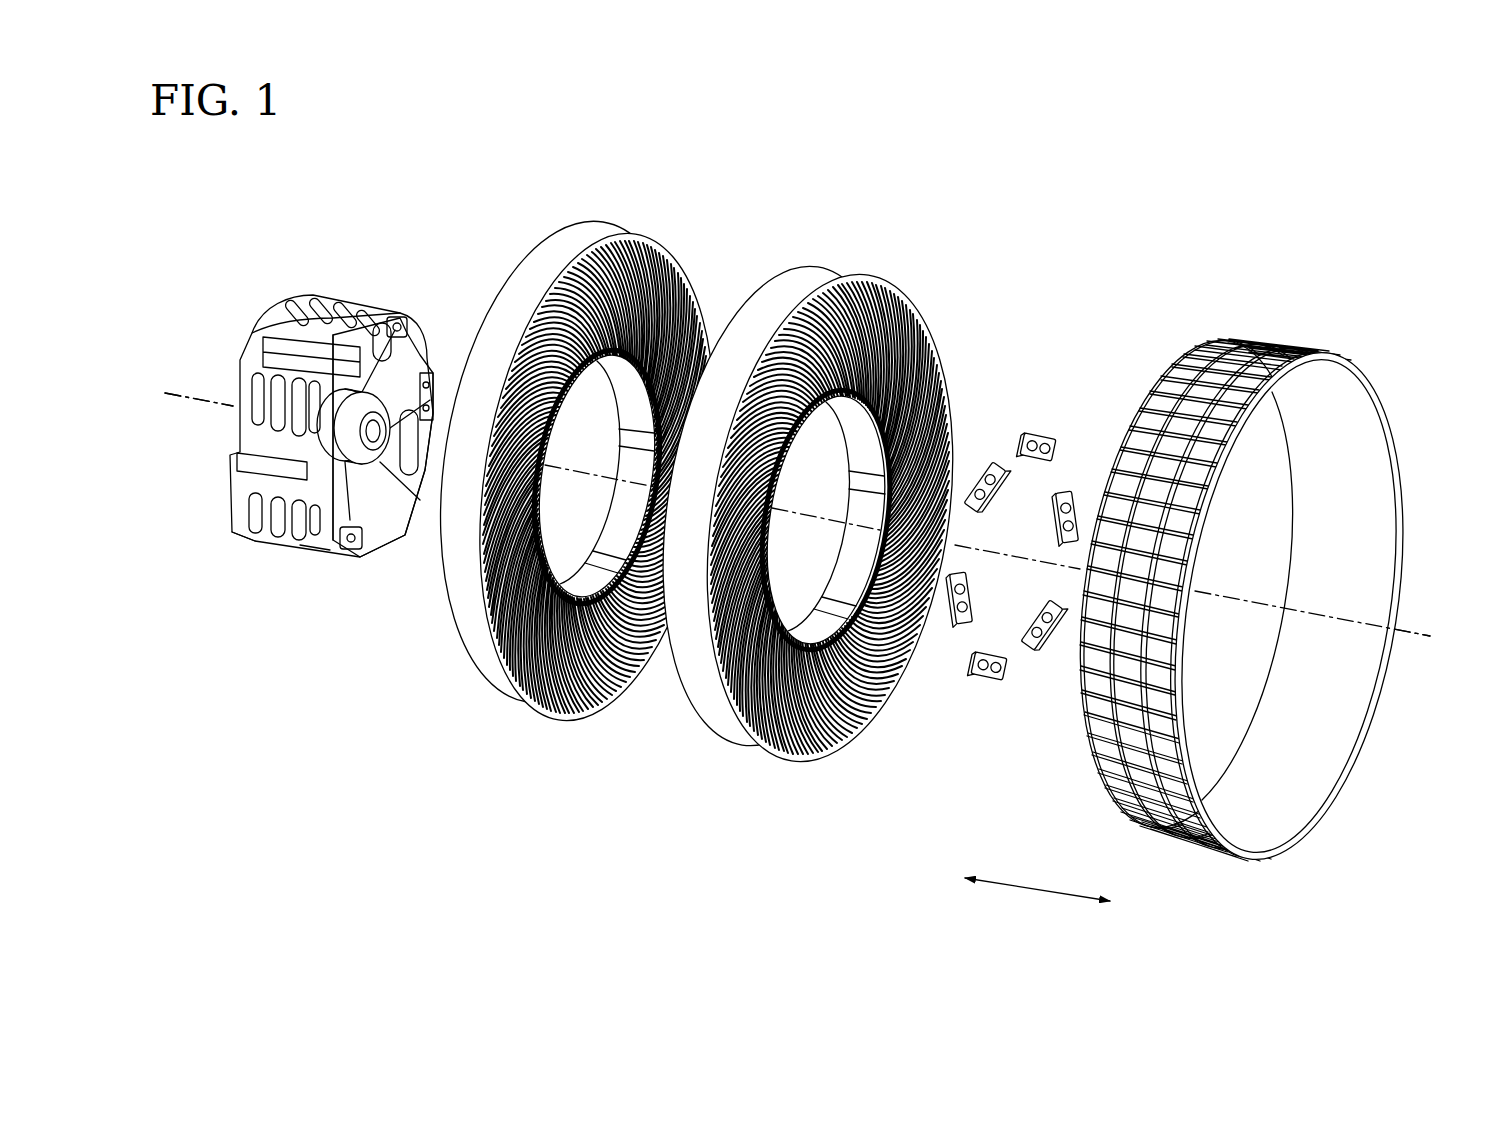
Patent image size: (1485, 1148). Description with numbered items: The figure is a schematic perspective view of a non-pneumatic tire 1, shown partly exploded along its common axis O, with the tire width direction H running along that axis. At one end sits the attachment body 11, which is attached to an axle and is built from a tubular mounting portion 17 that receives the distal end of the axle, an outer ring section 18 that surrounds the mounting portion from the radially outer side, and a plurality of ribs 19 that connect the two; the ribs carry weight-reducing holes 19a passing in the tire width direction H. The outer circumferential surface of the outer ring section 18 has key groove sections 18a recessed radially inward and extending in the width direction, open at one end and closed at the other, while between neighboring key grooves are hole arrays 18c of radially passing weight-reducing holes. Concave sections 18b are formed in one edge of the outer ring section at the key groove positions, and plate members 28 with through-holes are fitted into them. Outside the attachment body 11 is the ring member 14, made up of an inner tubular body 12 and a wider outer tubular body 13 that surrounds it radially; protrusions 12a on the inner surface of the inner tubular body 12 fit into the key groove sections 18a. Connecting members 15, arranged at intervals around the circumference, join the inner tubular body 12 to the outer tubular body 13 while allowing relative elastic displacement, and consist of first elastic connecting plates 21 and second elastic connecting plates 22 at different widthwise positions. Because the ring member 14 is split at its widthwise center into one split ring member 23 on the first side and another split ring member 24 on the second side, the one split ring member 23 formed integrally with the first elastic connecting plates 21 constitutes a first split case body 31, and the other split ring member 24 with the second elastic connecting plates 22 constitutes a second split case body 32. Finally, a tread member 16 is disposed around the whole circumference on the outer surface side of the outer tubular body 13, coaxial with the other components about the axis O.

The non-pneumatic tire 1 is at (1180, 180).
The attachment body 11 is at (303, 289).
The inner tubular body 12 is at (941, 350).
The protrusions 12a is at (868, 426).
The outer tubular body 13 is at (939, 334).
The ring member 14 is at (1013, 309).
The connecting members 15 is at (902, 348).
The tread member 16 is at (1281, 346).
The tubular mounting portion 17 is at (372, 399).
The outer ring section 18 is at (241, 512).
The key groove sections 18a is at (265, 471).
The concave sections 18b is at (400, 512).
The hole arrays 18c is at (246, 419).
The ribs 19 is at (331, 531).
The weight-reducing holes 19a is at (300, 520).
The first elastic connecting plates 21 is at (889, 321).
The second elastic connecting plates 22 is at (660, 283).
The one split ring member 23 is at (855, 262).
The other split ring member 24 is at (626, 219).
The plate members 28 is at (1046, 430).
The first split case body 31 is at (861, 450).
The second split case body 32 is at (577, 408).
The axis O is at (187, 386).
The tire width direction H is at (1037, 903).